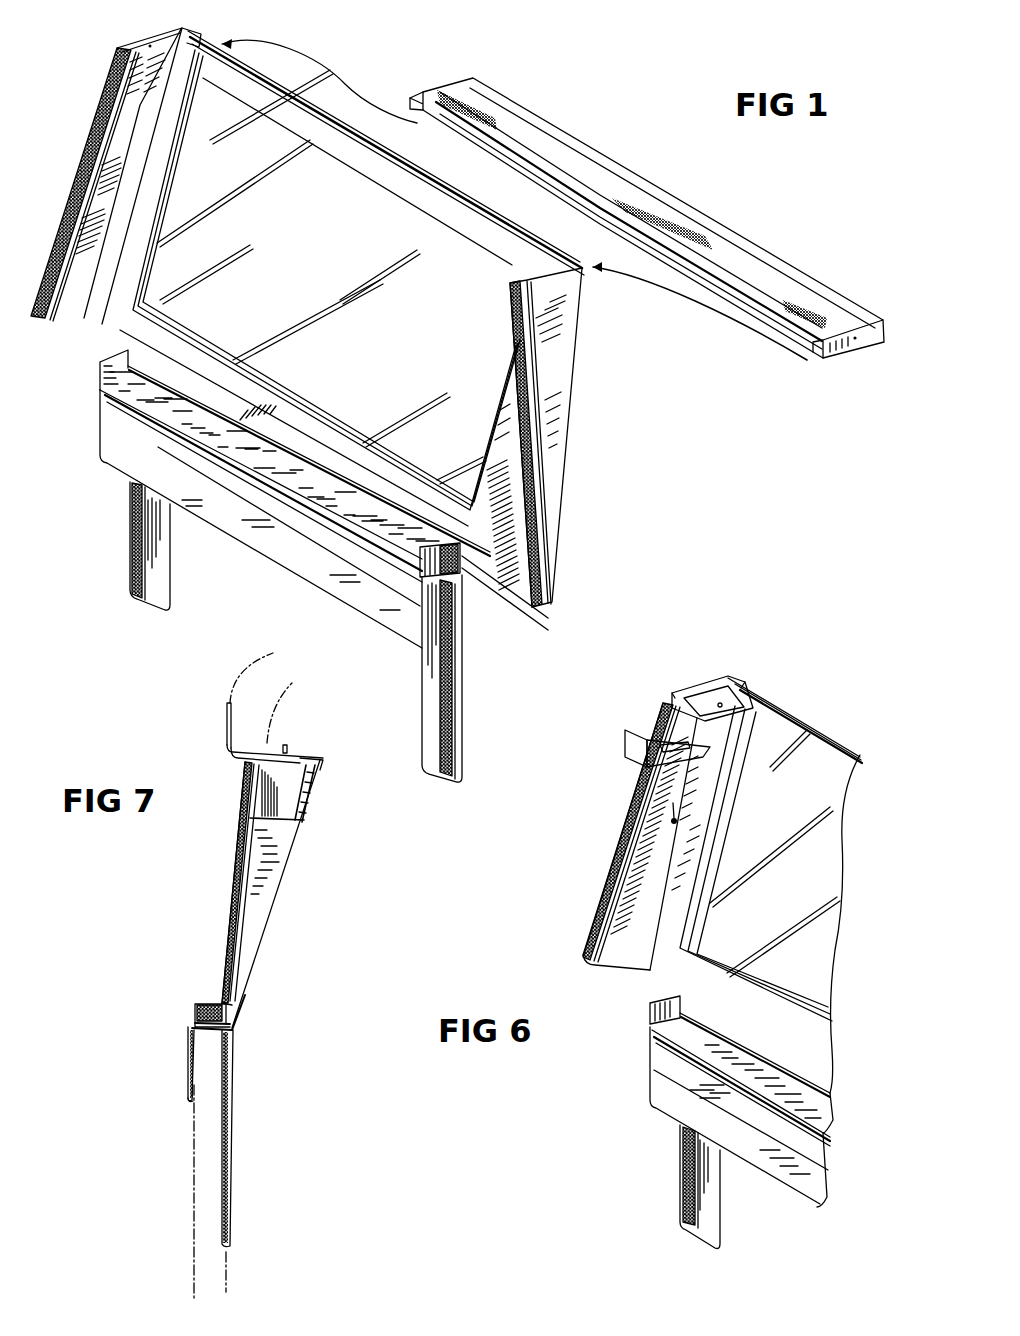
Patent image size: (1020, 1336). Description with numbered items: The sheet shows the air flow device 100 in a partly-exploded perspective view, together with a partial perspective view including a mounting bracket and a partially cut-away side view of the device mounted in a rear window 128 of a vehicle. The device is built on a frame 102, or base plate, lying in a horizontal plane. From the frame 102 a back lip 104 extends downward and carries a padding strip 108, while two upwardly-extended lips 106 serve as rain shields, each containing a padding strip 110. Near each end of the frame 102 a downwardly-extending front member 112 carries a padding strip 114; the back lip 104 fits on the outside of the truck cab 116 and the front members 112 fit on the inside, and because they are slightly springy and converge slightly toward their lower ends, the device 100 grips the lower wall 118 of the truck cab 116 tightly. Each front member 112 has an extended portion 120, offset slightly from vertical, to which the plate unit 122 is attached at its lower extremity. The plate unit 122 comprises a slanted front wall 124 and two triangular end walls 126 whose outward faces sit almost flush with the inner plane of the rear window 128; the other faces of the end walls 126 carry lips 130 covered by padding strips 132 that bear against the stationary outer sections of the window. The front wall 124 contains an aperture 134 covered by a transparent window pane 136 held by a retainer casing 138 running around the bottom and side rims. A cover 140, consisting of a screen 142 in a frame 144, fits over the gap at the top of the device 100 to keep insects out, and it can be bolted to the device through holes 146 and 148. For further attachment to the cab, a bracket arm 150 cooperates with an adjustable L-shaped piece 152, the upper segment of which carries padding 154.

In FIG. 1, the air flow device 100 is at (573, 542).
In FIG. 7, the air flow device 100 is at (305, 897).
In FIG. 6, the air flow device 100 is at (629, 995).
In FIG. 1, the frame 102 is at (357, 533).
In FIG. 7, the frame 102 is at (210, 1030).
In FIG. 6, the frame 102 is at (687, 1038).
In FIG. 1, the back lip 104 is at (247, 537).
In FIG. 7, the back lip 104 is at (187, 1077).
In FIG. 6, the back lip 104 is at (668, 1098).
In FIG. 1, the upwardly-extended lips 106 is at (100, 378).
In FIG. 7, the upwardly-extended lips 106 is at (188, 1018).
In FIG. 6, the upwardly-extended lips 106 is at (650, 1023).
In FIG. 7, the padding strip 108 is at (200, 1088).
In FIG. 1, the padding strip 110 is at (462, 577).
In FIG. 7, the padding strip 110 is at (195, 1006).
In FIG. 1, the front members 112 is at (163, 549).
In FIG. 7, the front members 112 is at (235, 1140).
In FIG. 6, the front members 112 is at (710, 1189).
In FIG. 1, the padding strip 114 is at (134, 536).
In FIG. 7, the padding strip 114 is at (222, 1206).
In FIG. 6, the padding strip 114 is at (688, 1183).
In FIG. 7, the truck cab 116 is at (190, 1258).
In FIG. 7, the lower wall 118 is at (200, 1174).
In FIG. 7, the extended portion 120 is at (240, 1014).
In FIG. 1, the plate unit 122 is at (560, 388).
In FIG. 7, the plate unit 122 is at (250, 952).
In FIG. 6, the plate unit 122 is at (622, 928).
In FIG. 7, the front wall 124 is at (327, 772).
In FIG. 6, the front wall 124 is at (618, 968).
In FIG. 1, the end walls 126 is at (124, 44).
In FIG. 7, the end walls 126 is at (238, 911).
In FIG. 6, the end walls 126 is at (681, 694).
In FIG. 7, the rear window 128 is at (203, 953).
In FIG. 1, the lips 130 is at (48, 322).
In FIG. 7, the lips 130 is at (248, 806).
In FIG. 6, the lips 130 is at (590, 966).
In FIG. 1, the padding strips 132 is at (72, 197).
In FIG. 7, the padding strips 132 is at (243, 854).
In FIG. 6, the padding strips 132 is at (609, 878).
In FIG. 7, the aperture 134 is at (313, 789).
In FIG. 1, the window pane 136 is at (243, 117).
In FIG. 7, the window pane 136 is at (310, 808).
In FIG. 6, the window pane 136 is at (770, 768).
In FIG. 1, the retainer casing 138 is at (196, 40).
In FIG. 7, the retainer casing 138 is at (305, 823).
In FIG. 6, the retainer casing 138 is at (688, 852).
In FIG. 1, the cover 140 is at (530, 106).
In FIG. 1, the screen 142 is at (593, 148).
In FIG. 1, the frame 144 is at (687, 227).
In FIG. 1, the holes 146 is at (855, 339).
In FIG. 1, the holes 148 is at (153, 46).
In FIG. 7, the bracket arm 150 is at (306, 754).
In FIG. 6, the bracket arm 150 is at (711, 705).
In FIG. 6, the adjustable L-shaped piece 152 is at (625, 749).
In FIG. 7, the padding 154 is at (226, 722).